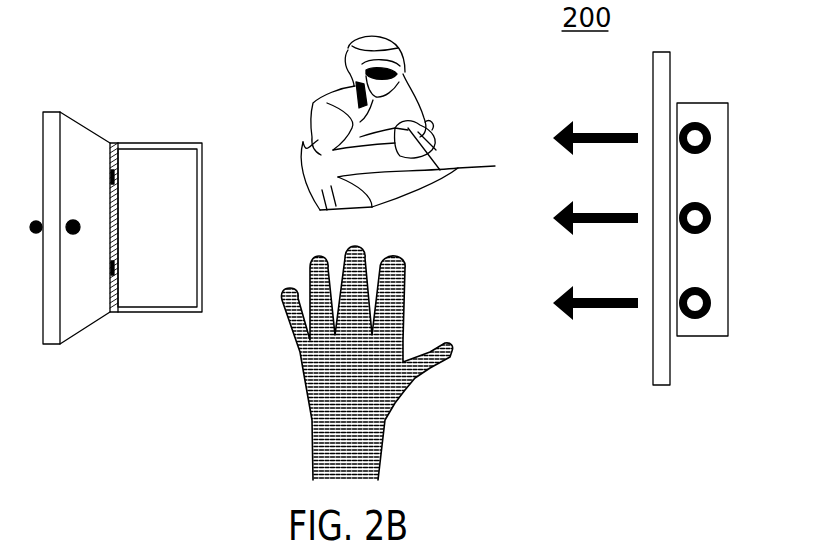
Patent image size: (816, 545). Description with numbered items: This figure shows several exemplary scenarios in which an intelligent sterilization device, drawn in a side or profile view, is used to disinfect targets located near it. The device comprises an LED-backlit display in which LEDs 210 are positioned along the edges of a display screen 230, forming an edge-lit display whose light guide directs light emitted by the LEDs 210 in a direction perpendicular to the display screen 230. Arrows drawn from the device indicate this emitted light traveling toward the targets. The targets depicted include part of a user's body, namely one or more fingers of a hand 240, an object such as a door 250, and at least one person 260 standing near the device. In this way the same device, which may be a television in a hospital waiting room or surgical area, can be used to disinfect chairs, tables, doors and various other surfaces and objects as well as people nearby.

The LEDs 210 is at (700, 118).
The display screen 230 is at (656, 388).
The hand 240 is at (312, 443).
The door 250 is at (172, 312).
The person 260 is at (370, 33).